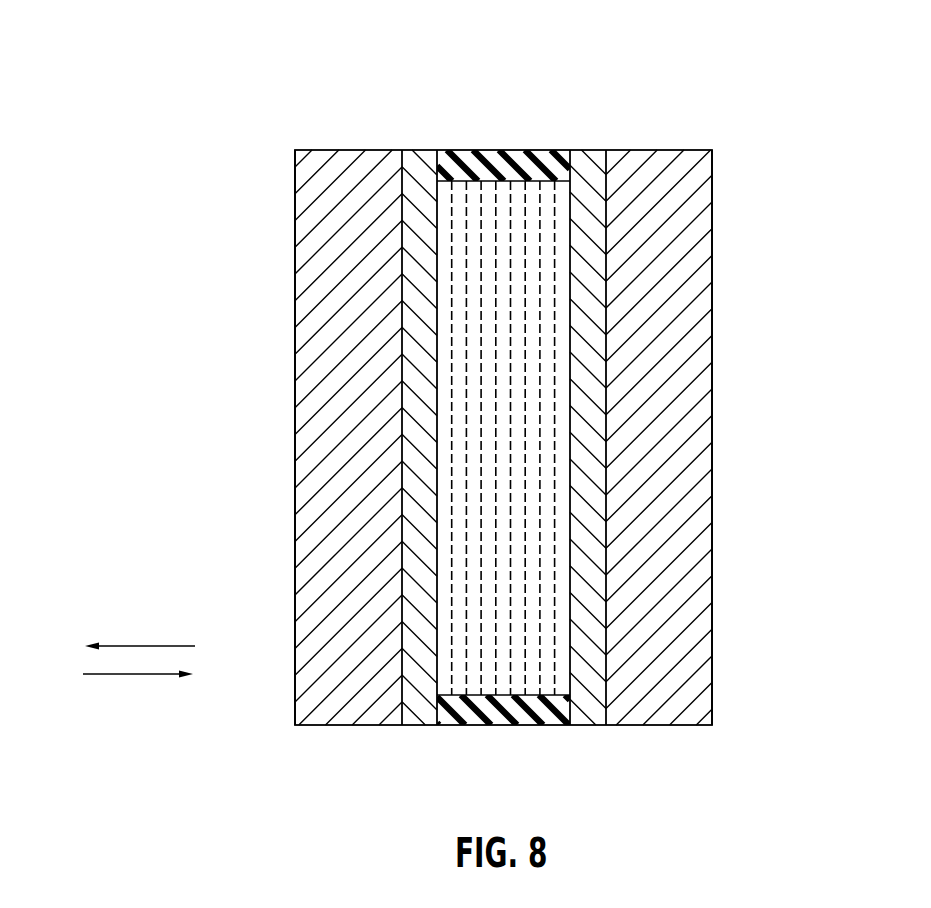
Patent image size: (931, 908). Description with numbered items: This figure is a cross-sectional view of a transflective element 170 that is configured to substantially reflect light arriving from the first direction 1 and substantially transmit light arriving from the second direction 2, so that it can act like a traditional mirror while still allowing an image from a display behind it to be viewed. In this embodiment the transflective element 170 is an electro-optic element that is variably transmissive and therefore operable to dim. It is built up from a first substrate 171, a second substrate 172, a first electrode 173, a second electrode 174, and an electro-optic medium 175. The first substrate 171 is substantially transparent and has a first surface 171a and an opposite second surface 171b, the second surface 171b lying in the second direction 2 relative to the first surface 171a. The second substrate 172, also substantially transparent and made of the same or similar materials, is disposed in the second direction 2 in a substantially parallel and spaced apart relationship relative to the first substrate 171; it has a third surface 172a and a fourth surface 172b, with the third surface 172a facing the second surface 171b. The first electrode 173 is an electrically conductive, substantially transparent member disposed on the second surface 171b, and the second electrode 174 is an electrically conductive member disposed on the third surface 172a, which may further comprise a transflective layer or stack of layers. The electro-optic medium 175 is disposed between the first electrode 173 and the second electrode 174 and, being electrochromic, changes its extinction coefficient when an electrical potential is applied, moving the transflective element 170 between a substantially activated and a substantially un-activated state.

The transflective element 170 is at (198, 89).
The first substrate 171 is at (340, 285).
The first surface 171a is at (295, 197).
The second surface 171b is at (412, 152).
The second substrate 172 is at (680, 278).
The third surface 172a is at (605, 163).
The fourth surface 172b is at (712, 197).
The first electrode 173 is at (422, 160).
The second electrode 174 is at (590, 163).
The electro-optic medium 175 is at (525, 508).
The first direction 1 is at (132, 648).
The second direction 2 is at (151, 678).